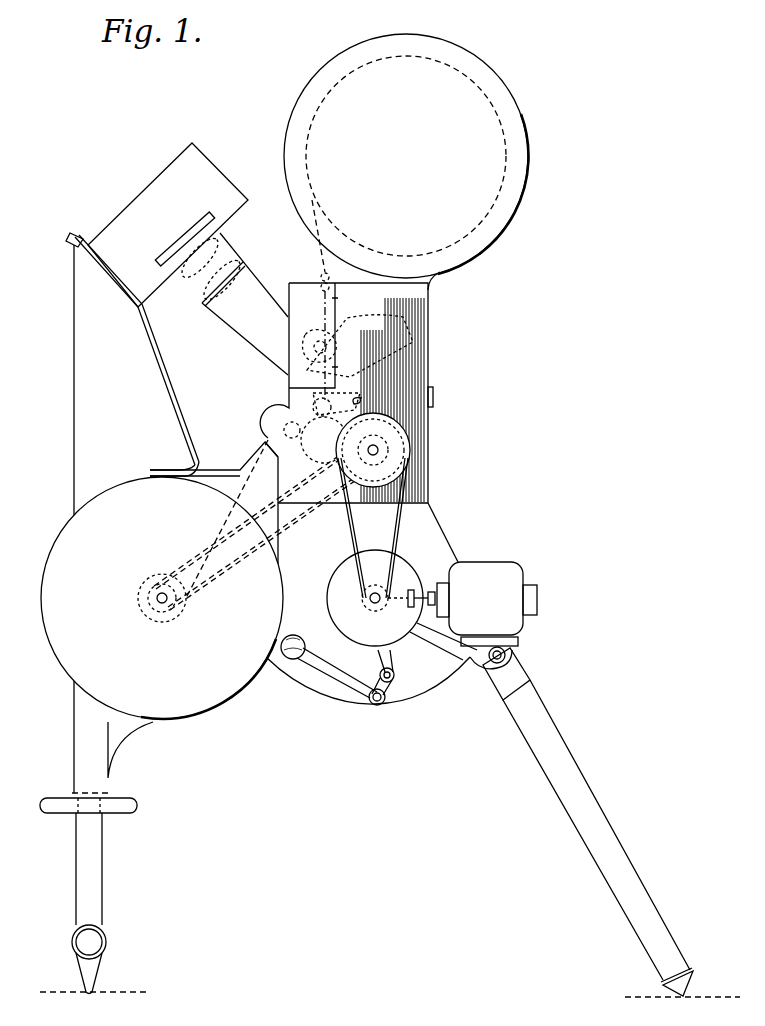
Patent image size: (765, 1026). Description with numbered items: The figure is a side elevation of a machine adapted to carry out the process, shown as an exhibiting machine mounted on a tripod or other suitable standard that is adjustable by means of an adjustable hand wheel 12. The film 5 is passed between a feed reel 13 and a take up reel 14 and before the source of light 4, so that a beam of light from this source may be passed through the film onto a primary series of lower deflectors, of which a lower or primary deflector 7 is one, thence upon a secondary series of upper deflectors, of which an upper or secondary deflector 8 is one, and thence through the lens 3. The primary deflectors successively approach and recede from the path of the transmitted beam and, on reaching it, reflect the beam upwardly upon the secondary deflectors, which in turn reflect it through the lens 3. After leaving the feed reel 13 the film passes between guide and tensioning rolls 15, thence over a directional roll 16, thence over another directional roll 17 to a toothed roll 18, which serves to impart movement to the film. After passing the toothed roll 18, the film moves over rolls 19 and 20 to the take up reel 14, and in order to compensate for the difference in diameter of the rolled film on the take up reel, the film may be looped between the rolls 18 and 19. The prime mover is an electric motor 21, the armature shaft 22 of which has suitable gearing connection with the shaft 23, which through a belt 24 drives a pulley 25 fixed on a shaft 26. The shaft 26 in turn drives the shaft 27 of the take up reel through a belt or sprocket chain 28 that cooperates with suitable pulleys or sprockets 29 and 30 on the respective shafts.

The lens 3 is at (432, 395).
The source of light 4 is at (186, 240).
The film 5 is at (312, 202).
The lower or primary deflector 7 is at (357, 420).
The upper or secondary deflector 8 is at (362, 398).
The adjustable hand wheel 12 is at (125, 813).
The feed reel 13 is at (526, 160).
The take up reel 14 is at (67, 523).
The guide and tensioning rolls 15 is at (323, 277).
The directional roll 16 is at (323, 357).
The directional roll 17 is at (343, 378).
The toothed roll 18 is at (320, 405).
The roll 19 is at (290, 428).
The roll 20 is at (268, 440).
The electric motor 21 is at (515, 575).
The armature shaft 22 is at (414, 585).
The shaft 23 is at (363, 596).
The belt 24 is at (398, 534).
The pulley 25 is at (412, 453).
The shaft 26 is at (385, 450).
The shaft of the take up reel 27 is at (158, 602).
The belt or sprocket chain 28 is at (230, 575).
The pulley or sprocket 29 is at (360, 505).
The pulley or sprocket 30 is at (175, 577).